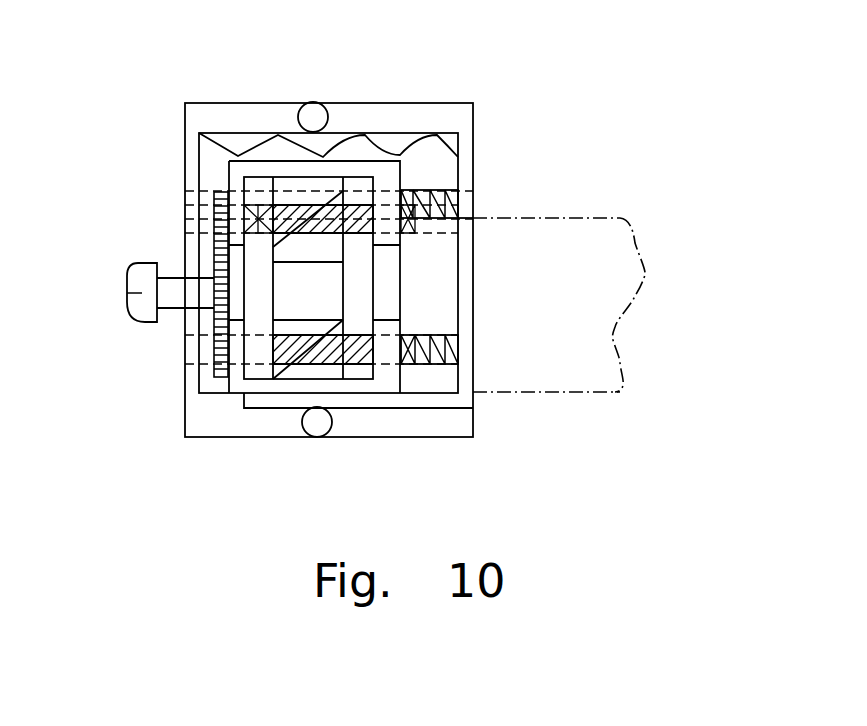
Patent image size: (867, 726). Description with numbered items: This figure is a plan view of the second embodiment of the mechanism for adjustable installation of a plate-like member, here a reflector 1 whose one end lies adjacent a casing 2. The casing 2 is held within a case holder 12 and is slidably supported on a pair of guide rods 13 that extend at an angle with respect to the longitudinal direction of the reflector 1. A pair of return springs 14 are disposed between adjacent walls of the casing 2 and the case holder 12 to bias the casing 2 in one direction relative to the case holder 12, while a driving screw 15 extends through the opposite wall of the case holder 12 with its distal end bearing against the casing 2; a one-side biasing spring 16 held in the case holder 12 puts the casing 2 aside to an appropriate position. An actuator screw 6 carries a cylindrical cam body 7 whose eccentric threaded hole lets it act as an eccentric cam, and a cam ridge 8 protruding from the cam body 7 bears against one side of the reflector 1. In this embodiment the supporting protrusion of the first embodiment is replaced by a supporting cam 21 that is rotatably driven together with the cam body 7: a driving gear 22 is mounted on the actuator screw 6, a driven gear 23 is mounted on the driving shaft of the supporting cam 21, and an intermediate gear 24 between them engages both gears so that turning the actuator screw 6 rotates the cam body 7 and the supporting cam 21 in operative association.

The reflector 1 is at (623, 262).
The casing 2 is at (305, 170).
The actuator screw 6 is at (360, 213).
The cylindrical cam body 7 is at (282, 198).
The cam ridge 8 is at (332, 205).
The case holder 12 is at (196, 165).
The guide rods 13 is at (192, 198).
The return springs 14 is at (447, 203).
The driving screw 15 is at (134, 309).
The one-side biasing spring 16 is at (396, 155).
The supporting cam 21 is at (317, 370).
The driving gear 22 is at (213, 232).
The driven gear 23 is at (225, 373).
The intermediate gear 24 is at (220, 258).